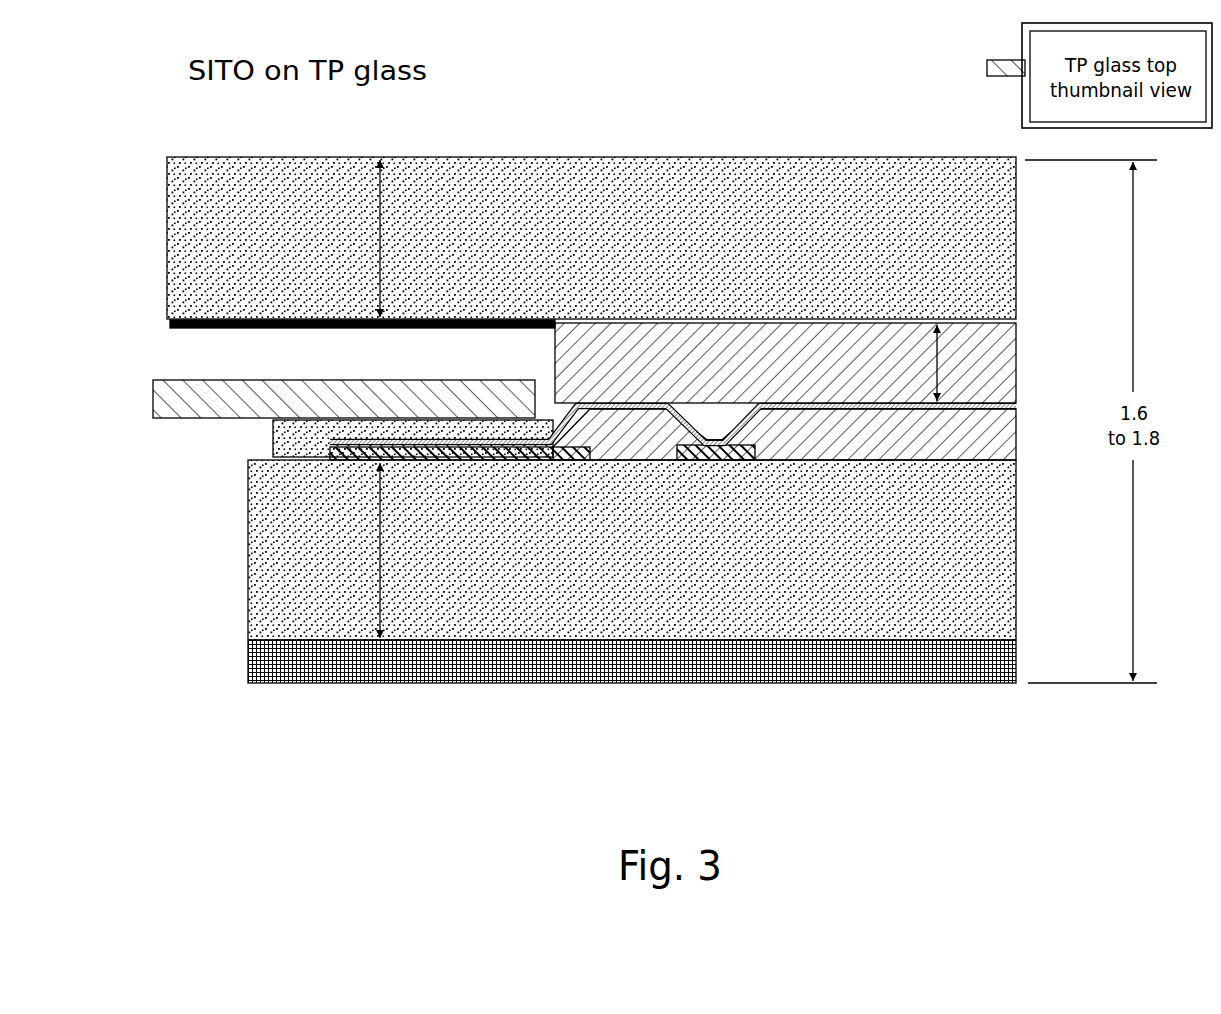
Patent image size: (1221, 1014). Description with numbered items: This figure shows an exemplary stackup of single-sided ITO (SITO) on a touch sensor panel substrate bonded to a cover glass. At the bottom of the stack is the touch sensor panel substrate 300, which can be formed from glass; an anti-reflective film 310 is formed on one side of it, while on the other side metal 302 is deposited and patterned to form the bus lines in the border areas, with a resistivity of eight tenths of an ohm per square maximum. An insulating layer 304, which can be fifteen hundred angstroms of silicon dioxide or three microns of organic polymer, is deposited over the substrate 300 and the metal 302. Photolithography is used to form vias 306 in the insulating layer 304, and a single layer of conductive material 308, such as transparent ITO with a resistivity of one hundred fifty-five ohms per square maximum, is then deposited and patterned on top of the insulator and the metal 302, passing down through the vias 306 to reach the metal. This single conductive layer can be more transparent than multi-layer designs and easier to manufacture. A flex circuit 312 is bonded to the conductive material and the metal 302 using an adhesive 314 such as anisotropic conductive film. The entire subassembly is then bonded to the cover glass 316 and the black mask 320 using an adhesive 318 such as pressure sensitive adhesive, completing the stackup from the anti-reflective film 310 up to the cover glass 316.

The touch sensor panel substrate 300 is at (1015, 548).
The metal 302 is at (533, 461).
The insulating layer 304 is at (628, 442).
The vias 306 is at (745, 427).
The conductive material 308 is at (858, 412).
The anti-reflective film 310 is at (1017, 662).
The flex circuit 312 is at (309, 380).
The adhesive 314 is at (273, 437).
The cover glass 316 is at (1005, 274).
The adhesive 318 is at (1000, 364).
The black mask 320 is at (468, 329).